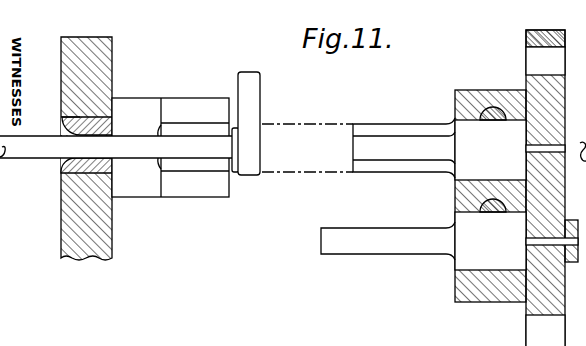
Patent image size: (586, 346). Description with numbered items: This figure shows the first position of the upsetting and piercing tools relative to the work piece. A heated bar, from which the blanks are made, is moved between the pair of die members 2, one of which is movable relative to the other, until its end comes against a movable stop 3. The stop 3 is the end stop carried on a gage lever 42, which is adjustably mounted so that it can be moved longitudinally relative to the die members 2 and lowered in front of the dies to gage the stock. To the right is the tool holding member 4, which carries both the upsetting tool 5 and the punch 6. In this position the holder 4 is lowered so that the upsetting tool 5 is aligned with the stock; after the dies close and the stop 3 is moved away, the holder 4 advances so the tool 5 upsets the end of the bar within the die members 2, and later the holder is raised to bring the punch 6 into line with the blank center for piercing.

The die members 2 is at (153, 104).
The movable stop 3 is at (252, 151).
The gage lever 42 is at (252, 86).
The tool holding member 4 is at (486, 98).
The upsetting tool 5 is at (407, 127).
The punch 6 is at (397, 248).